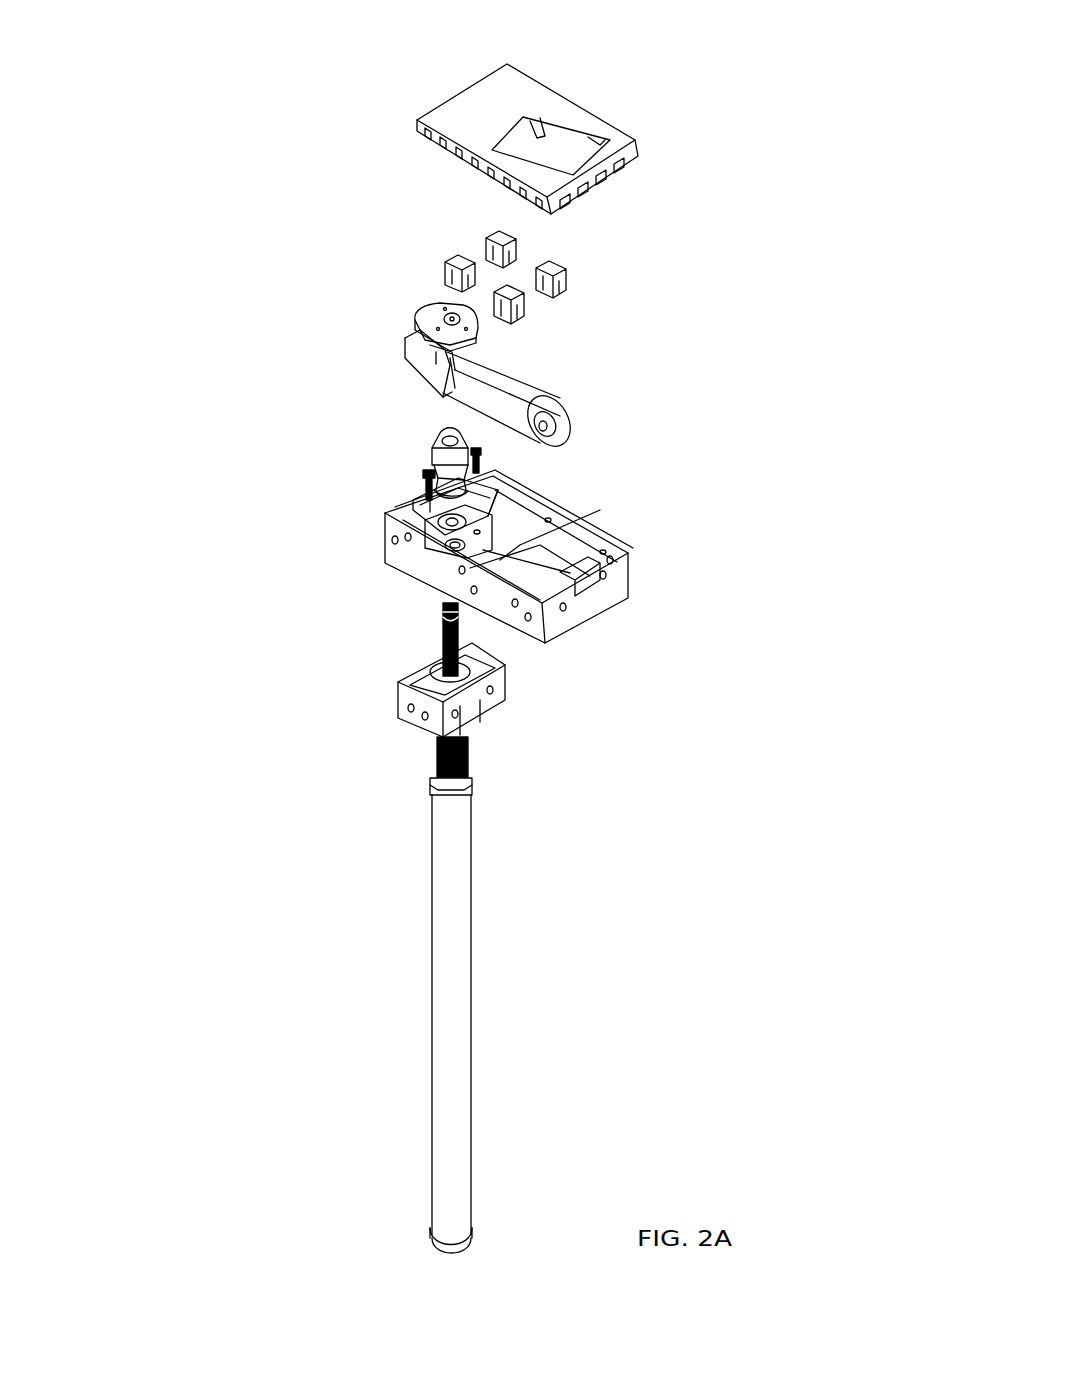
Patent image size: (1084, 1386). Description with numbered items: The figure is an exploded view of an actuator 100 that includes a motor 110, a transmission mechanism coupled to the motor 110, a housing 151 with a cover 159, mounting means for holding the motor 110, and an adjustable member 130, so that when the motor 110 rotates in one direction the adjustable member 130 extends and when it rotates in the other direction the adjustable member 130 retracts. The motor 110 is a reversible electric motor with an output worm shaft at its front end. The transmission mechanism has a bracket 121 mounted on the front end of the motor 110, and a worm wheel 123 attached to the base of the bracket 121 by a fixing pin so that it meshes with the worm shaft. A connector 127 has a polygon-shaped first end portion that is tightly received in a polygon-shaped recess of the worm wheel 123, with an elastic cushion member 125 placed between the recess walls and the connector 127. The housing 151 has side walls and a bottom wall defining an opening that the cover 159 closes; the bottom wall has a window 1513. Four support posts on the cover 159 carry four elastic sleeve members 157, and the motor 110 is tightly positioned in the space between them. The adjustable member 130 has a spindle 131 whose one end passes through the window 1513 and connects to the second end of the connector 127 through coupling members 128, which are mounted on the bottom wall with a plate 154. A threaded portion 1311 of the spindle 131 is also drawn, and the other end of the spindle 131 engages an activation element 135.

The actuator 100 is at (529, 42).
The motor 110 is at (458, 378).
The bracket 121 is at (407, 342).
The worm wheel 123 is at (487, 338).
The cushion member 125 is at (437, 438).
The connector 127 is at (437, 473).
The coupling members 128 is at (492, 537).
The adjustable member 130 is at (547, 772).
The spindle 131 is at (440, 645).
The threaded rod 1311 is at (443, 600).
The activation element 135 is at (447, 1000).
The housing 151 is at (575, 612).
The window 1513 is at (466, 553).
The plate 154 is at (488, 497).
The sleeve members 157 is at (447, 265).
The cover 159 is at (598, 195).